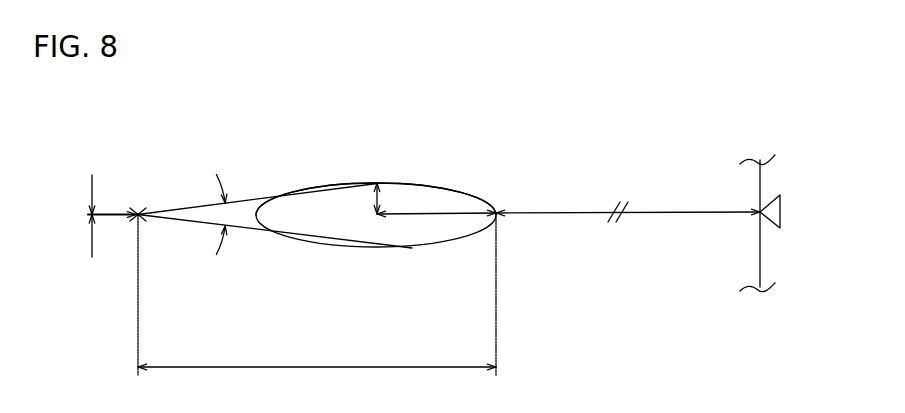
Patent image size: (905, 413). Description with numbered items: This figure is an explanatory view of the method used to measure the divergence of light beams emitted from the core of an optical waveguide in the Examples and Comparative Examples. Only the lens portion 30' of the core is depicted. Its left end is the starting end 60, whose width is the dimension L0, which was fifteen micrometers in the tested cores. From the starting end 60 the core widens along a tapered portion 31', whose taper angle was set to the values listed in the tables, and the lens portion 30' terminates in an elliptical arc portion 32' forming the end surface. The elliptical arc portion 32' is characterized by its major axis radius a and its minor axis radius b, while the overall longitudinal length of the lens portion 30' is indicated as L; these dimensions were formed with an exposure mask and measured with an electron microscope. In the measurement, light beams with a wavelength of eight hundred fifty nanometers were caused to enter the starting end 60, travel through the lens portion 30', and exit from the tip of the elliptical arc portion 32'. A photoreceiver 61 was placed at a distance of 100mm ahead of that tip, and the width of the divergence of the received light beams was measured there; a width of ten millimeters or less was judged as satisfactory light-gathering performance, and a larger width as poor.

The starting end 60 is at (136, 210).
The photoreceiver 61 is at (781, 218).
The lens portion 30' is at (411, 279).
The tapered portion 31' is at (308, 163).
The elliptical arc portion 32' is at (436, 163).
The width of the starting end L0 is at (90, 214).
The longitudinal length of the lens portion L is at (317, 355).
The major axis radius a is at (418, 213).
The minor axis radius b is at (372, 203).
The distance from tip to photoreceiver 100mm is at (628, 200).